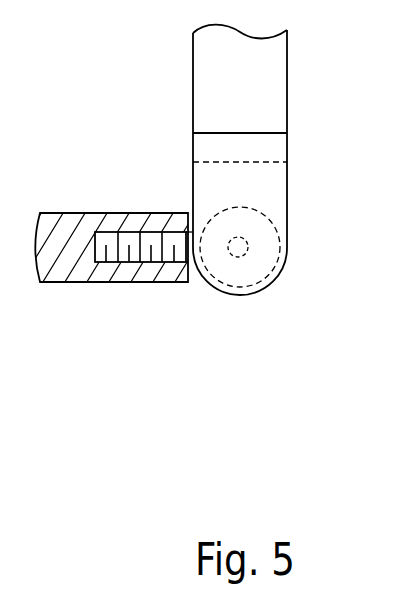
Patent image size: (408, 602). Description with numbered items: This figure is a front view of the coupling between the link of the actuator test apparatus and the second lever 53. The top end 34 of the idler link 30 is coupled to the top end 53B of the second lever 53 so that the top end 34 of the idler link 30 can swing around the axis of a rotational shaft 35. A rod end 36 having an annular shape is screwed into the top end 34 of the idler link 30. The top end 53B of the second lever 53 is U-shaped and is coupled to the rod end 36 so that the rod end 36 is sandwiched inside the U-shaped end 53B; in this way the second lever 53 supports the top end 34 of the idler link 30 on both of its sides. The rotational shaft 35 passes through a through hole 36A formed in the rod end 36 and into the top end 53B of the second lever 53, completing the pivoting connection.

The idler link 30 is at (65, 283).
The top end of the idler link 34 is at (163, 283).
The rotational shaft 35 is at (248, 243).
The rod end 36 is at (239, 296).
The through hole 36A is at (252, 252).
The second lever 53 is at (288, 86).
The top end of the second lever 53B is at (277, 253).